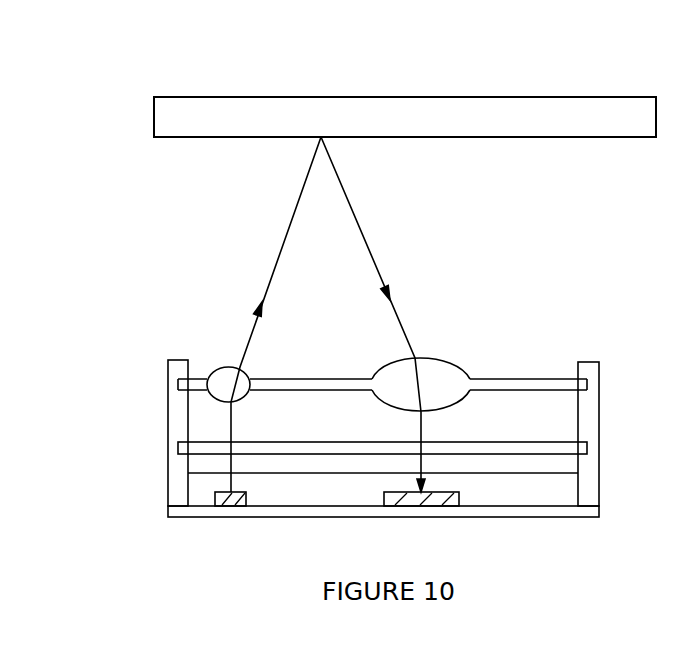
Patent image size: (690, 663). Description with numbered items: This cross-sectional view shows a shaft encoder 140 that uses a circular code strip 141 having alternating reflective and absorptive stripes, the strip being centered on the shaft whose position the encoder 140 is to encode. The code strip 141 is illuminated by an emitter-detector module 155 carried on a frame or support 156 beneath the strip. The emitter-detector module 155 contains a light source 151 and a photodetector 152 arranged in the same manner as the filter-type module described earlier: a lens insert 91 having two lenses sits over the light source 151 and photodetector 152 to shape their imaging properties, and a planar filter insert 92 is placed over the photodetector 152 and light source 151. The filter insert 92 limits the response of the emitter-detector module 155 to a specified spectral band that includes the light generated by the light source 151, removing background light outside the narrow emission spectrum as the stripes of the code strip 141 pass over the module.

The encoder 140 is at (64, 93).
The circular code strip 141 is at (513, 129).
The lens insert 91 is at (333, 382).
The filter insert 92 is at (306, 446).
The light source 151 is at (231, 507).
The photodetector 152 is at (438, 507).
The emitter-detector module 155 is at (562, 510).
The frame / support 156 is at (599, 448).